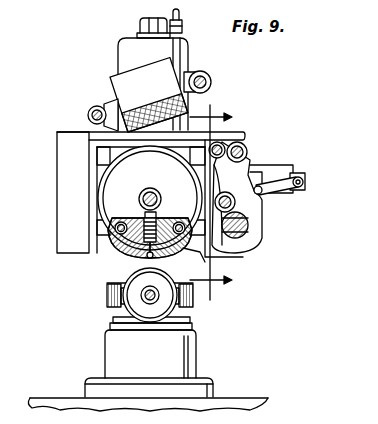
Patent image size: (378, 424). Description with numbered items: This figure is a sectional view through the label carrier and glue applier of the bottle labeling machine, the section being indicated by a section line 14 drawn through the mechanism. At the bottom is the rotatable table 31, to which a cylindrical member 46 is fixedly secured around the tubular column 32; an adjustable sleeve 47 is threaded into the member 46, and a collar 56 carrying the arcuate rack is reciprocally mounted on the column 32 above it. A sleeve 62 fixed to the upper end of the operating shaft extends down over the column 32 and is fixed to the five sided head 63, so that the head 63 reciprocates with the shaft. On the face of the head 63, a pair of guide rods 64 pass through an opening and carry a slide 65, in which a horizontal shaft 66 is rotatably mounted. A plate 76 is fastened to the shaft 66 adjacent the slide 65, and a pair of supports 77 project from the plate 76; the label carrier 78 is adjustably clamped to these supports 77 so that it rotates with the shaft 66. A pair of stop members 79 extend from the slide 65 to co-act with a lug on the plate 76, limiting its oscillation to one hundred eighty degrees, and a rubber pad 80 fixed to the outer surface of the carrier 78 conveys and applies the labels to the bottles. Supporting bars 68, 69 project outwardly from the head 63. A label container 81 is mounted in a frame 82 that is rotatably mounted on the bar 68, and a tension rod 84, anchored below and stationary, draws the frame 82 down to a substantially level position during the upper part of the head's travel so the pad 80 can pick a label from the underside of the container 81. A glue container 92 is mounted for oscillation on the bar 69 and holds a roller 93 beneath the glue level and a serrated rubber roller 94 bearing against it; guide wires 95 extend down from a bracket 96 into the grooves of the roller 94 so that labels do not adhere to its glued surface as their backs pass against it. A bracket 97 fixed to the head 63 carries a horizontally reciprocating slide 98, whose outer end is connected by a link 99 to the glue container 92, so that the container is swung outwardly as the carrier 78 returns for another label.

The section line 14 is at (219, 200).
The table 31 is at (236, 406).
The tubular column 32 is at (136, 262).
The cylindrical member 46 is at (149, 363).
The adjustable sleeve 47 is at (191, 326).
The collar 56 is at (122, 272).
The sleeve 62 is at (153, 74).
The five sided head 63 is at (57, 175).
The guide rods 64 is at (100, 152).
The slide 65 is at (100, 186).
The shaft 66 is at (164, 172).
The supporting bar 68 is at (95, 110).
The supporting bar 69 is at (246, 146).
The plate 76 is at (150, 198).
The supports 77 is at (112, 252).
The label carrier 78 is at (112, 260).
The stop members 79 is at (100, 224).
The rubber pad 80 is at (183, 266).
The label holder or container 81 is at (149, 95).
The frame 82 is at (212, 80).
The tension rod 84 is at (182, 31).
The glue container 92 is at (237, 197).
The roller 93 is at (247, 228).
The serrated roller 94 is at (238, 205).
The guide wires 95 is at (258, 166).
The bracket 96 is at (222, 143).
The bracket 97 is at (304, 171).
The slide 98 is at (304, 180).
The link 99 is at (292, 192).